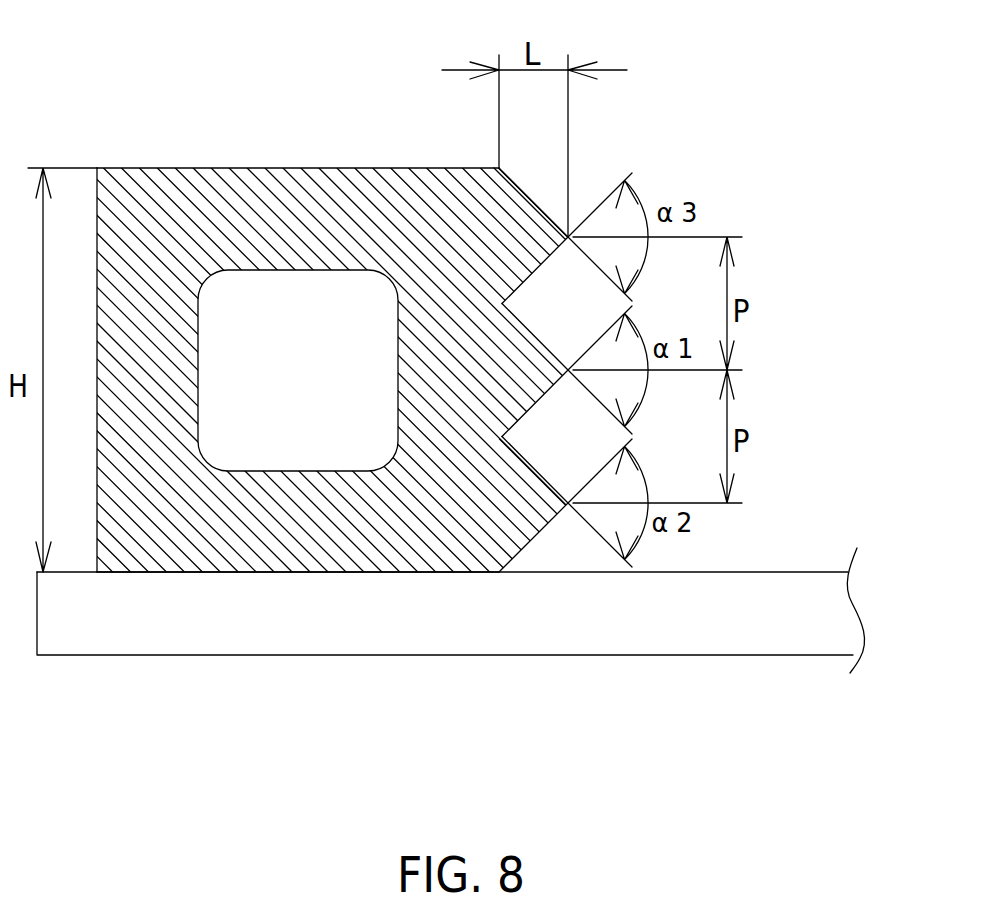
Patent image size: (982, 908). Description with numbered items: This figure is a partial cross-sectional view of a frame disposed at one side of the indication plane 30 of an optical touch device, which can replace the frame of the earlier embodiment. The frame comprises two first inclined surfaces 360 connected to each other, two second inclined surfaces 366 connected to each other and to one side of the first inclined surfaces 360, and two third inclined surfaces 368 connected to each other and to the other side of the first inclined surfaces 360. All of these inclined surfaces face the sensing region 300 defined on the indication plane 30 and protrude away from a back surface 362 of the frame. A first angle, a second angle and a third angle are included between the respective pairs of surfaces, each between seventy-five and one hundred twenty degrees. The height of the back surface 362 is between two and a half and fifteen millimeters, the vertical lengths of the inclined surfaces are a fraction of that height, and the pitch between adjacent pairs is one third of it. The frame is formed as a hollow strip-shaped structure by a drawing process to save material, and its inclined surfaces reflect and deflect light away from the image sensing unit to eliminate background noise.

The back surface 362 is at (97, 199).
The third inclined surfaces 368 is at (538, 204).
The first inclined surfaces 360 is at (535, 336).
The second inclined surfaces 366 is at (535, 470).
The sensing region 300 is at (813, 572).
The indication plane 30 is at (605, 640).